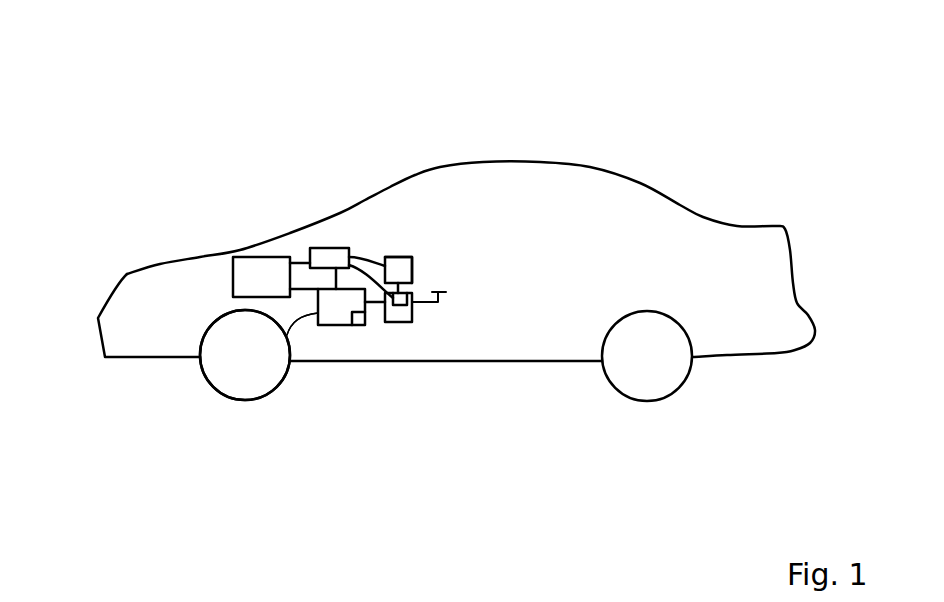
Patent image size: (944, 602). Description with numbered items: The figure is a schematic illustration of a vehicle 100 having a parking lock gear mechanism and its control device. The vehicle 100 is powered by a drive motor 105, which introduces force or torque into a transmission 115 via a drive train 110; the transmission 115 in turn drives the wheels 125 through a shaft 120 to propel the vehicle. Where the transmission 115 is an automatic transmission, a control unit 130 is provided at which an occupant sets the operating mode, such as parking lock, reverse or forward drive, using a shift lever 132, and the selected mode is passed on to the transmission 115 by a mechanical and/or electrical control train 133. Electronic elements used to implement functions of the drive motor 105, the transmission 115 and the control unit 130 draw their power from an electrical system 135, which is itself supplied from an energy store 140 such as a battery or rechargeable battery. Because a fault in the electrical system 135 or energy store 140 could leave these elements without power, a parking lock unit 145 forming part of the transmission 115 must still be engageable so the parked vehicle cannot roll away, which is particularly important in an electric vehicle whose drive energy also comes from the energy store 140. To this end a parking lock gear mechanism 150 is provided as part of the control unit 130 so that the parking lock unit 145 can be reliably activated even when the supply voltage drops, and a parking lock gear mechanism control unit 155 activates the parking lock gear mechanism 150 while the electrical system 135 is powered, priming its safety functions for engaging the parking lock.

The vehicle 100 is at (693, 167).
The drive motor 105 is at (247, 267).
The drive train 110 is at (290, 297).
The transmission 115 is at (330, 318).
The shaft 120 is at (318, 313).
The wheels 125 is at (225, 398).
The control unit 130 is at (395, 315).
The shift lever 132 is at (441, 294).
The control train 133 is at (374, 307).
The electrical system 135 is at (298, 257).
The energy store 140 is at (327, 255).
The parking lock unit 145 is at (358, 320).
The parking lock gear mechanism 150 is at (405, 292).
The parking lock gear mechanism control unit 155 is at (397, 263).